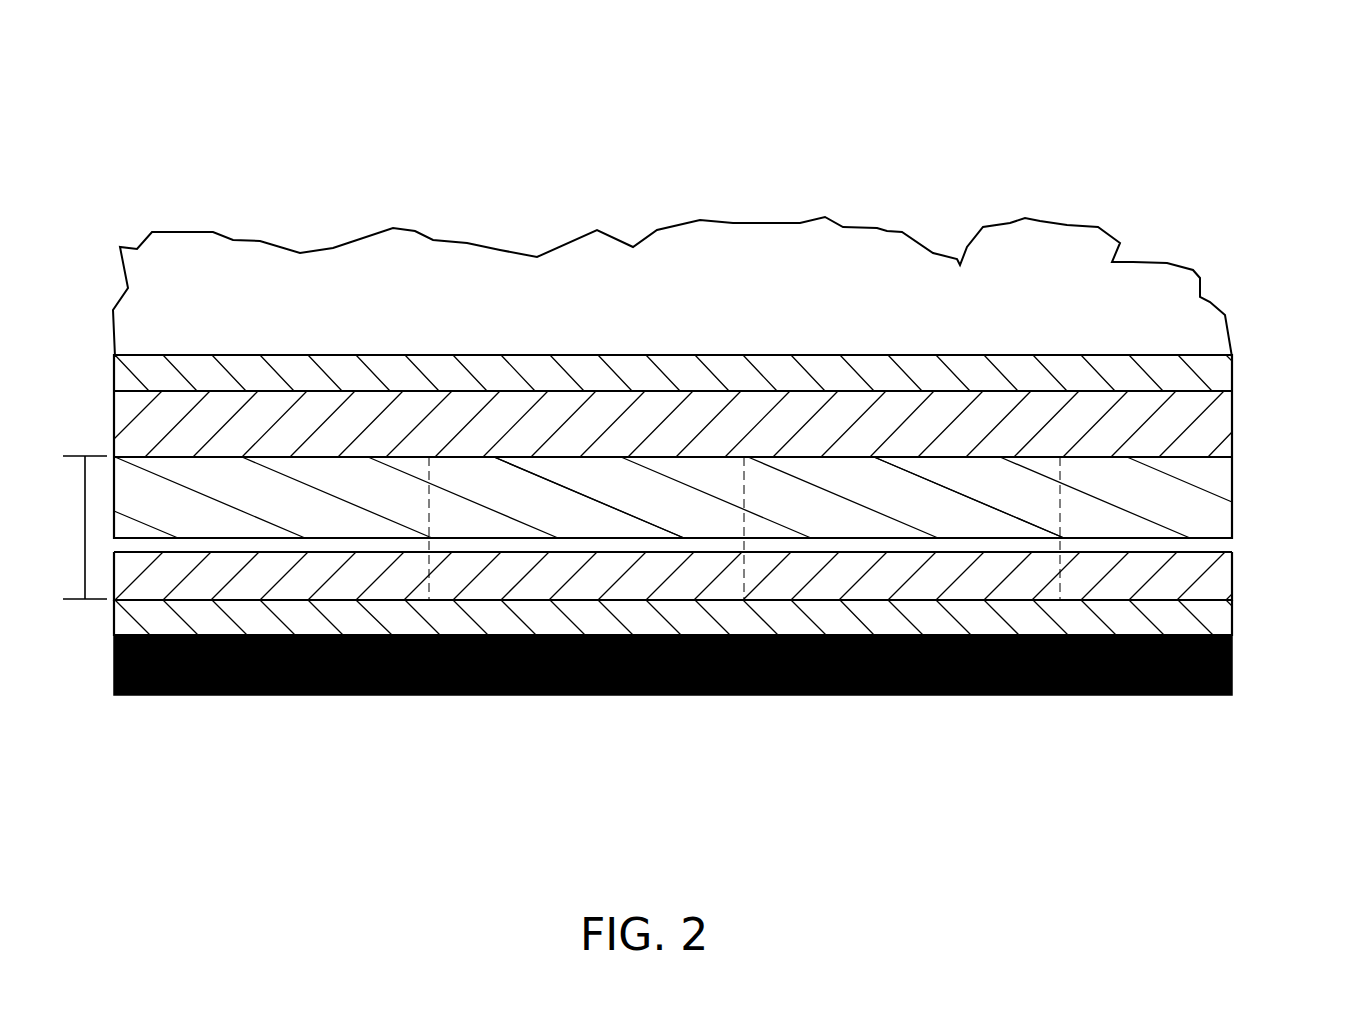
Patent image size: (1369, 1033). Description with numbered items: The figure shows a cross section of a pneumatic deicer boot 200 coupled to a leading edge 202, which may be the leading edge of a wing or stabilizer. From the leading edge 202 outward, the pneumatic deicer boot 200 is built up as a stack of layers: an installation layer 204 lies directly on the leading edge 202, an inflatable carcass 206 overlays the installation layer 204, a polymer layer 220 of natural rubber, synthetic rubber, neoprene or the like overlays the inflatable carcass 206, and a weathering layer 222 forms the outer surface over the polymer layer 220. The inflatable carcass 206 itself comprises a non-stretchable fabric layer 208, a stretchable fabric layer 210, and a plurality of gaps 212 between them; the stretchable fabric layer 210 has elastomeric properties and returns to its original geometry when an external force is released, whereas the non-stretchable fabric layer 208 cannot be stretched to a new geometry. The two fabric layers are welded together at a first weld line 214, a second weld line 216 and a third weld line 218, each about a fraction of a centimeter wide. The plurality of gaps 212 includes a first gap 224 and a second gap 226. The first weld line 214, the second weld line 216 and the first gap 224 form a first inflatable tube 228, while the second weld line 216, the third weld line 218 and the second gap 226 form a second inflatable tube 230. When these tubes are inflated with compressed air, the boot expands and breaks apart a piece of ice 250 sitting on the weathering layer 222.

The pneumatic deicer boot 200 is at (1007, 135).
The leading edge 202 is at (1232, 660).
The installation layer 204 is at (1232, 612).
The inflatable carcass 206 is at (85, 527).
The non-stretchable fabric layer 208 is at (1232, 573).
The stretchable fabric layer 210 is at (1232, 490).
The plurality of gaps 212 is at (1205, 547).
The first weld line 214 is at (1060, 512).
The second weld line 216 is at (744, 485).
The third weld line 218 is at (429, 515).
The polymer layer 220 is at (1232, 437).
The weathering layer 222 is at (1232, 380).
The first gap 224 is at (958, 543).
The second gap 226 is at (607, 543).
The first inflatable tube 228 is at (960, 472).
The second inflatable tube 230 is at (582, 478).
The piece of ice 250 is at (1098, 227).